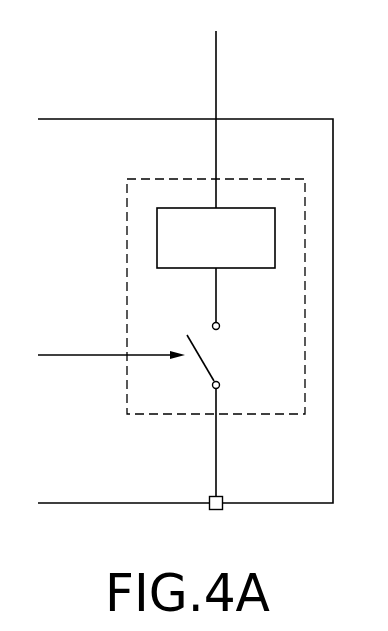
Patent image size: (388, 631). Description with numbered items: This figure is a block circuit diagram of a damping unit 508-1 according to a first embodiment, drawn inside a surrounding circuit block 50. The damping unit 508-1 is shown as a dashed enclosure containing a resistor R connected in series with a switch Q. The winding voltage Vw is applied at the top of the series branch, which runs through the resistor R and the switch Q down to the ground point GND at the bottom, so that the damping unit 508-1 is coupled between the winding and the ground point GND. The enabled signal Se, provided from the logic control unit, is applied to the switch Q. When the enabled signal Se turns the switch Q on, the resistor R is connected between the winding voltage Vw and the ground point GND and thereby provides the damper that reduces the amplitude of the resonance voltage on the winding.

The memory cell / circuit enclosure 50 is at (275, 118).
The damping unit 508-1 is at (187, 185).
The resistor R is at (245, 260).
The switch Q is at (215, 356).
The winding voltage Vw is at (207, 45).
The enabled signal Se is at (99, 347).
The ground point GND is at (216, 521).